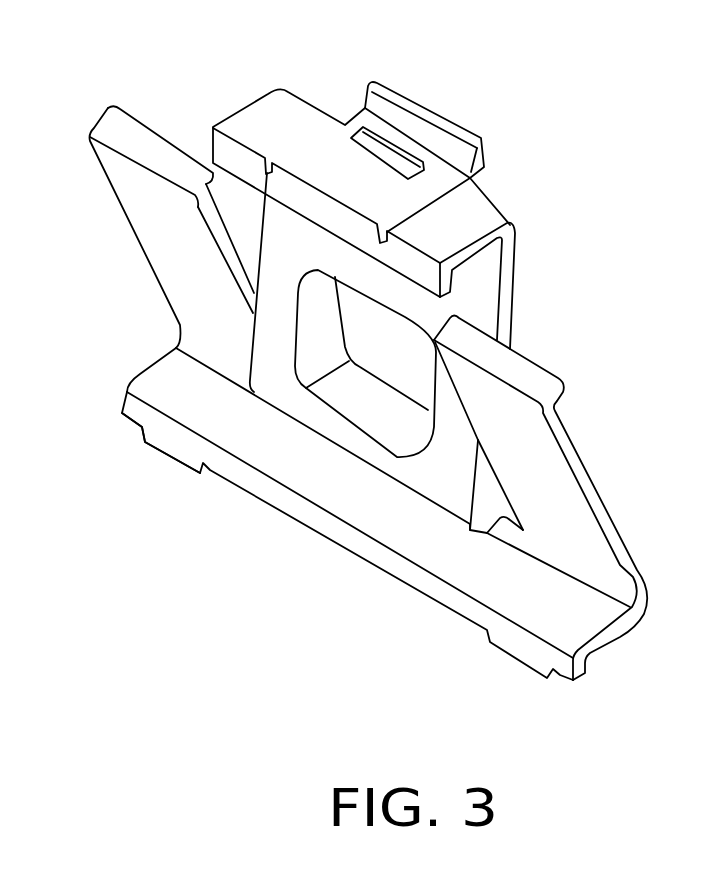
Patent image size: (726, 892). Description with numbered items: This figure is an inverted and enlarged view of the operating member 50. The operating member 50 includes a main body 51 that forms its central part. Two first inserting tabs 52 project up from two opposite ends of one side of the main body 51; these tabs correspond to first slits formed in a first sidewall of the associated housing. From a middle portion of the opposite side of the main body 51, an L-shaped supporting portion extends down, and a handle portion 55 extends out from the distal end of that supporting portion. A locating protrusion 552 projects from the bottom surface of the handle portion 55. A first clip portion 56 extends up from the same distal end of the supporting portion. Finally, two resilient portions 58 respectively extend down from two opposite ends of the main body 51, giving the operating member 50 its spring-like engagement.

The operating member 50 is at (384, 350).
The main body 51 is at (380, 515).
The first inserting tab 52 is at (178, 452).
The handle portion 55 is at (450, 123).
The locating protrusion 552 is at (362, 137).
The first clip portion 56 is at (448, 288).
The resilient portion 58 is at (541, 473).